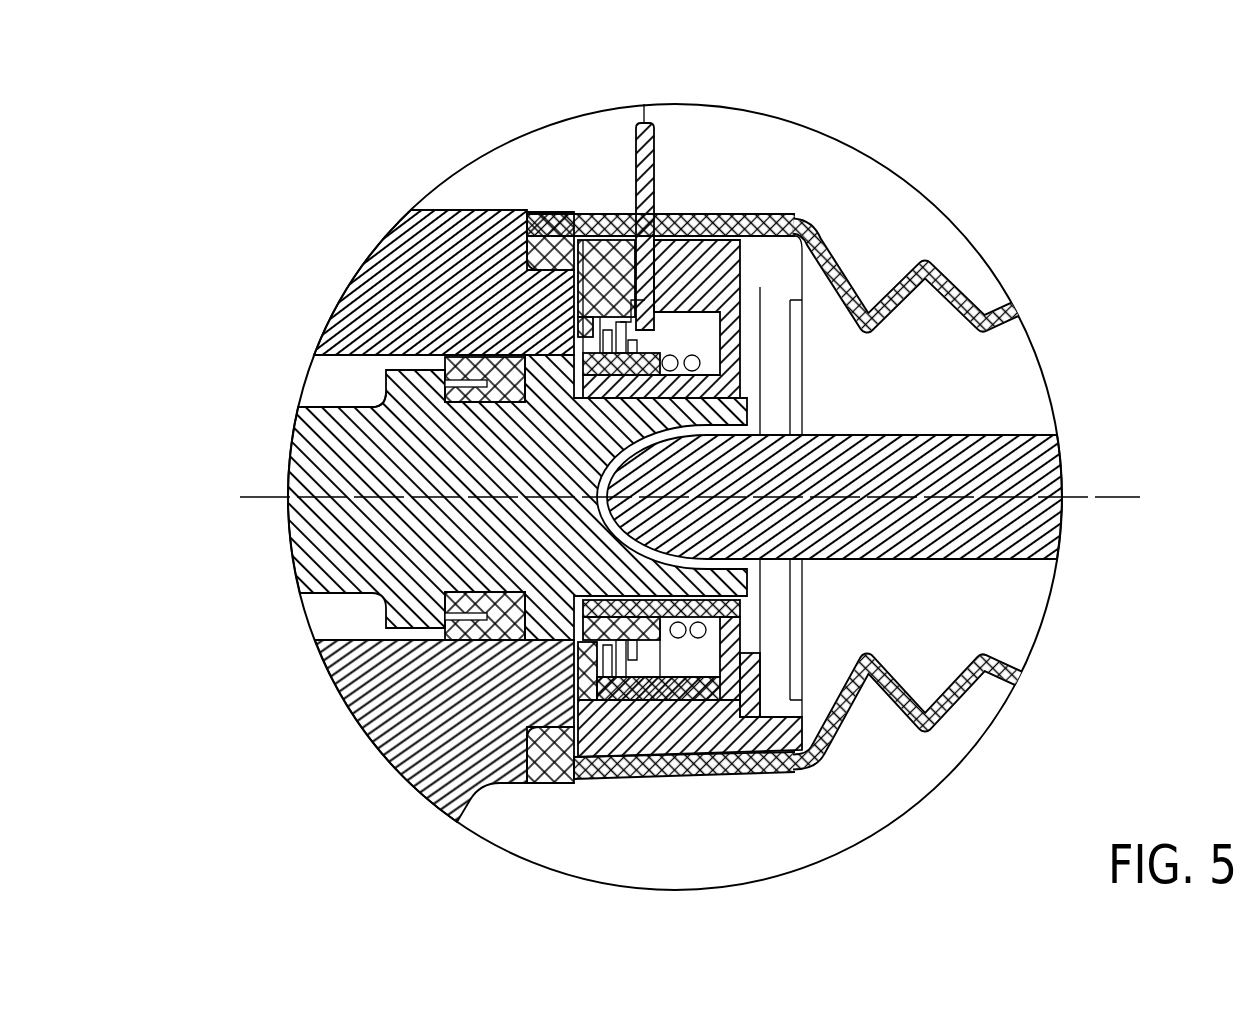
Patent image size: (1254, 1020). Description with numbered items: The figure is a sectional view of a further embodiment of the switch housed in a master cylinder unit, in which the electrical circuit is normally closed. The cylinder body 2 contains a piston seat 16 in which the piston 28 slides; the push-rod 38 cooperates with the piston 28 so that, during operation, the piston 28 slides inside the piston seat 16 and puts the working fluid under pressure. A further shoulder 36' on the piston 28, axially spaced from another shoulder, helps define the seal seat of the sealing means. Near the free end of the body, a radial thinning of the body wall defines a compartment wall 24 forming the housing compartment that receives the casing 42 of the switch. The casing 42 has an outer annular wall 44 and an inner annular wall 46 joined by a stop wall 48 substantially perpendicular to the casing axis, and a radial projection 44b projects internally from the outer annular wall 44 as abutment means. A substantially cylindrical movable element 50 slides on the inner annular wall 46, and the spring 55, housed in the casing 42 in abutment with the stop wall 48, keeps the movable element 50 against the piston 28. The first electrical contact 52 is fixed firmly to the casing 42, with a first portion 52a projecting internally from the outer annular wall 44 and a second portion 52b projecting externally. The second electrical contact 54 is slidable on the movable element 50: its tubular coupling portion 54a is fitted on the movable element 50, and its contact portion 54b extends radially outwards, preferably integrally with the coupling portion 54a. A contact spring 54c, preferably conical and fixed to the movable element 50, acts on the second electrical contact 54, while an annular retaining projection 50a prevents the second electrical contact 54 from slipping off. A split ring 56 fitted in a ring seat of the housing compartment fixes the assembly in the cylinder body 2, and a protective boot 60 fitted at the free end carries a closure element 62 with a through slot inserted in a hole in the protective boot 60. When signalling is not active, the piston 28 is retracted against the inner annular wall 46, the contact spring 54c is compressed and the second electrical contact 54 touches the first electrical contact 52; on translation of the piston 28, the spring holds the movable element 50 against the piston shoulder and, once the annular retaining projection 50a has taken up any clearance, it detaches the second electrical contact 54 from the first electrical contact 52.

The cylinder body 2 is at (411, 760).
The piston seat 16 is at (320, 385).
The compartment wall 24 is at (677, 778).
The piston 28 is at (345, 545).
The further shoulder 36' is at (315, 361).
The push-rod 38 is at (1024, 478).
The casing 42 is at (935, 250).
The outer annular wall 44 is at (563, 210).
The radial projection 44b is at (560, 340).
The inner annular wall 46 is at (762, 633).
The stop wall 48 is at (655, 317).
The movable element 50 is at (590, 322).
The annular retaining projection 50a is at (827, 750).
The first electrical contact 52 is at (673, 213).
The first portion 52a is at (975, 305).
The second portion 52b is at (660, 165).
The second electrical contact 54 is at (823, 752).
The tubular coupling portion 54a is at (750, 772).
The contact portion 54b is at (762, 405).
The contact spring 54c is at (573, 783).
The spring 55 is at (762, 650).
The split ring 56 is at (762, 697).
The protective boot 60 is at (755, 272).
The closure element 62 is at (663, 185).